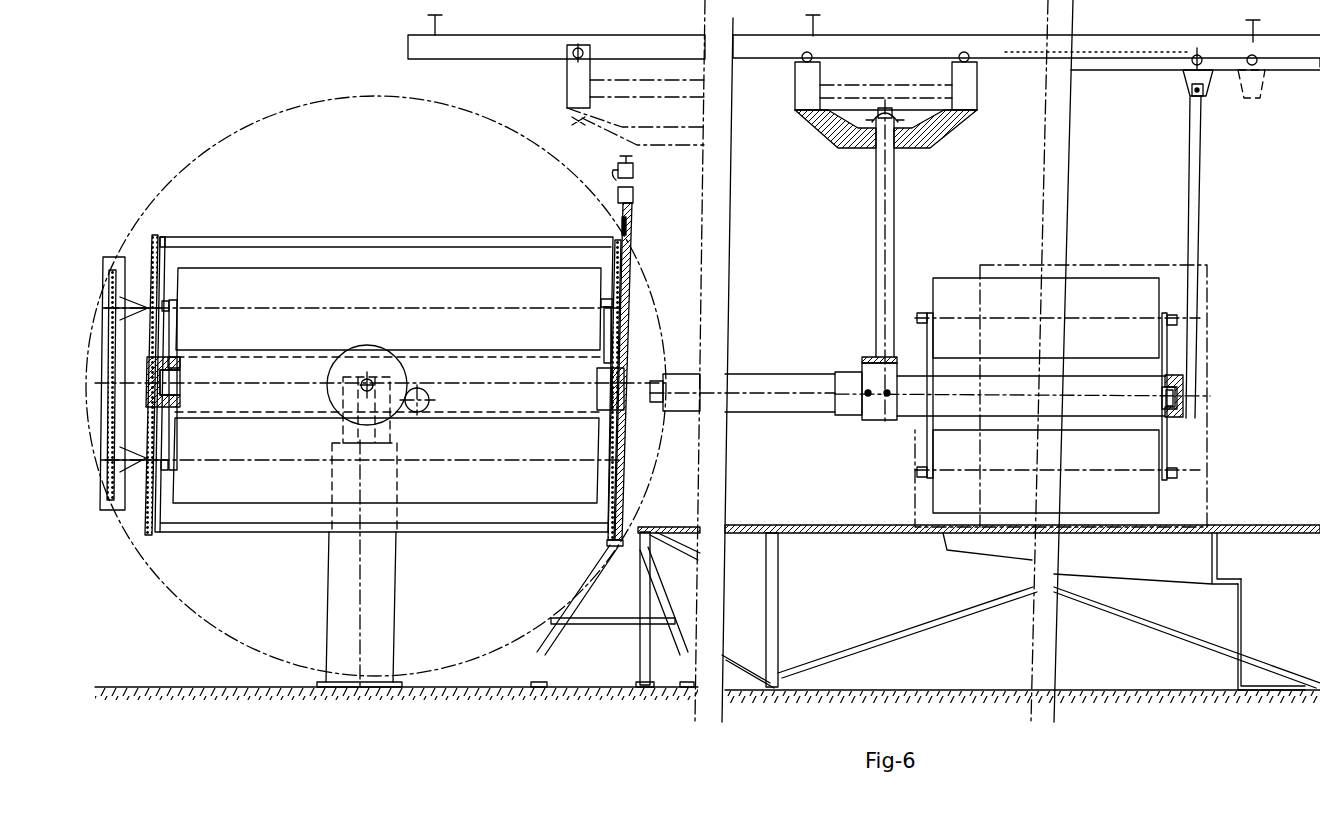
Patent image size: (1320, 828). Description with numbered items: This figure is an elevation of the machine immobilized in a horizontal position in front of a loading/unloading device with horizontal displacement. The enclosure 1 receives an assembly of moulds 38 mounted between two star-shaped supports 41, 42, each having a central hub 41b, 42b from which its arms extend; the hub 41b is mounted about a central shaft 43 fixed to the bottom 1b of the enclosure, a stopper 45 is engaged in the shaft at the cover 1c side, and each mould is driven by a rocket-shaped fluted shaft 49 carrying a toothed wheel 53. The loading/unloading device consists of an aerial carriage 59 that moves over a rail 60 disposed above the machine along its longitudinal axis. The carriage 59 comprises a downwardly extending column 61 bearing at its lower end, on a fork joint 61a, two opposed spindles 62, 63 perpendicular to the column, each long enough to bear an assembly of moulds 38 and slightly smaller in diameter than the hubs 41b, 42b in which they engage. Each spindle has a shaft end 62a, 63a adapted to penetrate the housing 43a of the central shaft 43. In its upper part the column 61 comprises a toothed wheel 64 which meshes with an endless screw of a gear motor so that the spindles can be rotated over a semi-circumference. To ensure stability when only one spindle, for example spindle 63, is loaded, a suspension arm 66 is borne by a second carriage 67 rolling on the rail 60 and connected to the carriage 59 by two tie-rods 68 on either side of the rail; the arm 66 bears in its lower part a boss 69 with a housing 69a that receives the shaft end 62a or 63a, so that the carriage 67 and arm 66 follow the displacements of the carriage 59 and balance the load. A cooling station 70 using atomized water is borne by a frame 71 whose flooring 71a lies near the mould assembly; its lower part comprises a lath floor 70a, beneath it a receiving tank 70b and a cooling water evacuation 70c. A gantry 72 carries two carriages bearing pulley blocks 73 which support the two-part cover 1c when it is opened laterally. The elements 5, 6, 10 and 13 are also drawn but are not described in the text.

The enclosure 1 is at (372, 240).
The bottom of the enclosure 1b is at (163, 237).
The cover 1c is at (620, 265).
The drive shaft 5 is at (376, 346).
The pedestal 6 is at (396, 589).
The roller 10 is at (432, 401).
The bearing 13 is at (345, 410).
The moulds 38 is at (280, 268).
The star-shaped support 41 is at (178, 332).
The central hub 41b is at (182, 373).
The star-shaped support 42 is at (604, 336).
The central hub 42b is at (597, 381).
The central shaft 43 is at (182, 387).
The housing 43a is at (183, 398).
The stopper 45 is at (630, 378).
The shaft 49 is at (146, 298).
The toothed wheel 53 is at (105, 257).
The aerial carriage 59 is at (562, 118).
The rail 60 is at (739, 42).
The column 61 is at (876, 192).
The fork joint 61a is at (864, 357).
The spindle 62 is at (760, 380).
The shaft end 62a is at (657, 411).
The spindle 63 is at (1114, 374).
The shaft end 63a is at (1183, 392).
The toothed wheel 64 is at (903, 122).
The suspension arm 66 is at (1200, 169).
The carriage 67 is at (1208, 96).
The tie-rods 68 is at (1125, 71).
The boss 69 is at (1184, 417).
The housing 69a is at (1184, 402).
The cooling station 70 is at (1212, 272).
The lath floor 70a is at (1078, 540).
The receiving tank 70b is at (1220, 566).
The cooling water evacuation 70c is at (1241, 622).
The frame 71 is at (778, 622).
The flooring 71a is at (790, 526).
The gantry 72 is at (634, 174).
The pulley blocks 73 is at (634, 200).